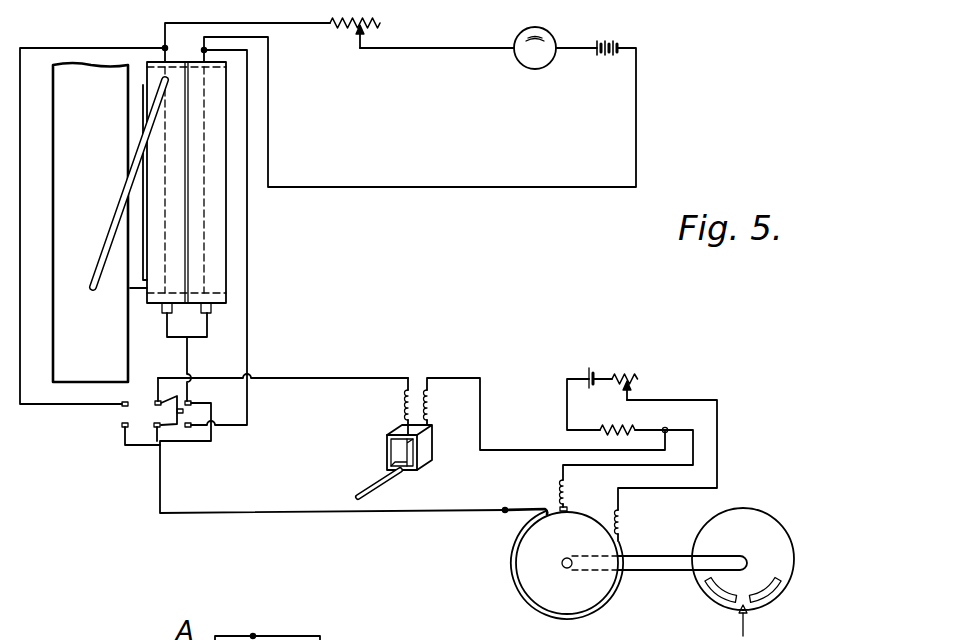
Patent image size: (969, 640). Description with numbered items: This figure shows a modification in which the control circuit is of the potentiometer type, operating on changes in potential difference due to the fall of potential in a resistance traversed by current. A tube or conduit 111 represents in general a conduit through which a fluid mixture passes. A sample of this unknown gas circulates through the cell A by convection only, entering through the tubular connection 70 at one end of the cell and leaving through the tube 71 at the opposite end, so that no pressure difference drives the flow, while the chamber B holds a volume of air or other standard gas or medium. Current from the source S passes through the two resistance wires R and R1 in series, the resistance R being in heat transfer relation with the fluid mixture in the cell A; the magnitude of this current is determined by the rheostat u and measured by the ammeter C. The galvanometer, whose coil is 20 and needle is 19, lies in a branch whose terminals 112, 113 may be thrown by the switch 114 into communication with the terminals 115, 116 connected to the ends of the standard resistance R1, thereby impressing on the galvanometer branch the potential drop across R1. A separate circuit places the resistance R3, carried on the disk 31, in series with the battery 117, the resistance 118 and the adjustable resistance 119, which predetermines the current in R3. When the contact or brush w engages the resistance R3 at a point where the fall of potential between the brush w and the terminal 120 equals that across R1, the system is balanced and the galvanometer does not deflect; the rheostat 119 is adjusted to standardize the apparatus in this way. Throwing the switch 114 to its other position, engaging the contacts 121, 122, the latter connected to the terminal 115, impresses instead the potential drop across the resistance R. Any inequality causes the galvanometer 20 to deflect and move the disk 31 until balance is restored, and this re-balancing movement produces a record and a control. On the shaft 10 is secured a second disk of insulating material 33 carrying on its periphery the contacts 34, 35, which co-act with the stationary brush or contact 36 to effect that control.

The cell A is at (143, 85).
The chamber B is at (228, 252).
The resistance wire R is at (168, 262).
The standard resistance R1 is at (208, 283).
The tube 71 is at (122, 208).
The tubular connection 70 is at (140, 290).
The tube or conduit 111 is at (60, 314).
The terminal 112 is at (156, 400).
The terminal 113 is at (156, 428).
The switch 114 is at (180, 412).
The terminal 115 is at (190, 401).
The terminal 116 is at (192, 427).
The contact 121 is at (123, 405).
The contact 122 is at (123, 426).
The rheostat u is at (378, 28).
The ammeter C is at (530, 62).
The source of current S is at (601, 56).
The battery or source of current 117 is at (591, 370).
The resistance 118 is at (610, 417).
The adjustable resistance 119 is at (640, 377).
The galvanometer coil 20 is at (420, 448).
The galvanometer needle 19 is at (372, 485).
The contact or brush w is at (537, 503).
The terminal 120 is at (568, 508).
The shaft 10 is at (565, 568).
The resistance R3 is at (514, 590).
The disk 31 is at (585, 592).
The disk of insulating material 33 is at (762, 533).
The contact 34 is at (776, 590).
The contact 35 is at (706, 589).
The stationary brush or contact 36 is at (743, 628).